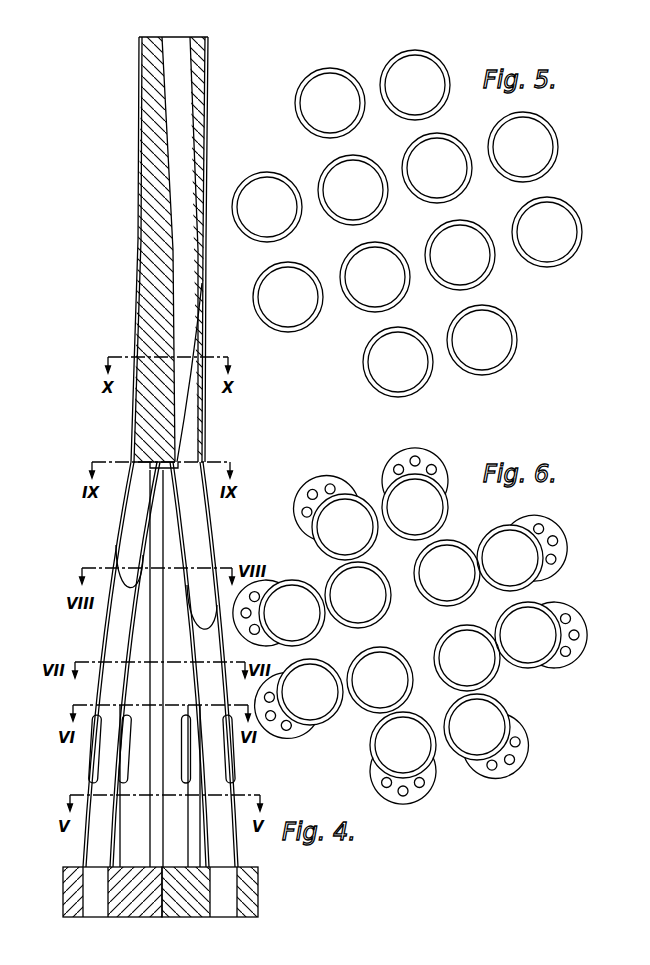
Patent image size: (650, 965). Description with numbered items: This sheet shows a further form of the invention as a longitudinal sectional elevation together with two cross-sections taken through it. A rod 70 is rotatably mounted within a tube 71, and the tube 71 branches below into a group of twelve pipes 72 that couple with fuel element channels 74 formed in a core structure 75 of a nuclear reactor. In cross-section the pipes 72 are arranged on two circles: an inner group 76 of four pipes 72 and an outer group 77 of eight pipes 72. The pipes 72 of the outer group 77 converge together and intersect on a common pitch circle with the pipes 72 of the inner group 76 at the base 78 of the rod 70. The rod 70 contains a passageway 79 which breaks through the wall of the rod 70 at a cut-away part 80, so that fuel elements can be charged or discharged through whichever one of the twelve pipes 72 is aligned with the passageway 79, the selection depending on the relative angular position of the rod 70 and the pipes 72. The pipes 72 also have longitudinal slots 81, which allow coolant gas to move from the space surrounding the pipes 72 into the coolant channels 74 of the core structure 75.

In FIG. 4, the rod 70 is at (196, 98).
In FIG. 4, the tube 71 is at (208, 143).
In FIG. 4, the pipes 72 is at (210, 648).
In FIG. 5, the pipes 72 is at (372, 380).
In FIG. 6, the pipes 72 is at (376, 772).
In FIG. 4, the fuel element channels 74 is at (95, 906).
In FIG. 4, the core structure 75 is at (240, 908).
In FIG. 4, the group of four pipes 76 is at (137, 845).
In FIG. 5, the group of four pipes 76 is at (483, 265).
In FIG. 6, the group of four pipes 76 is at (483, 670).
In FIG. 4, the outer group of eight pipes 77 is at (95, 846).
In FIG. 5, the outer group of eight pipes 77 is at (540, 146).
In FIG. 6, the outer group of eight pipes 77 is at (515, 522).
In FIG. 4, the base of the rod 78 is at (160, 462).
In FIG. 4, the passageway 79 is at (184, 311).
In FIG. 4, the cut-away part 80 is at (183, 352).
In FIG. 4, the longitudinal slots 81 is at (129, 768).
In FIG. 6, the longitudinal slots 81 is at (440, 480).